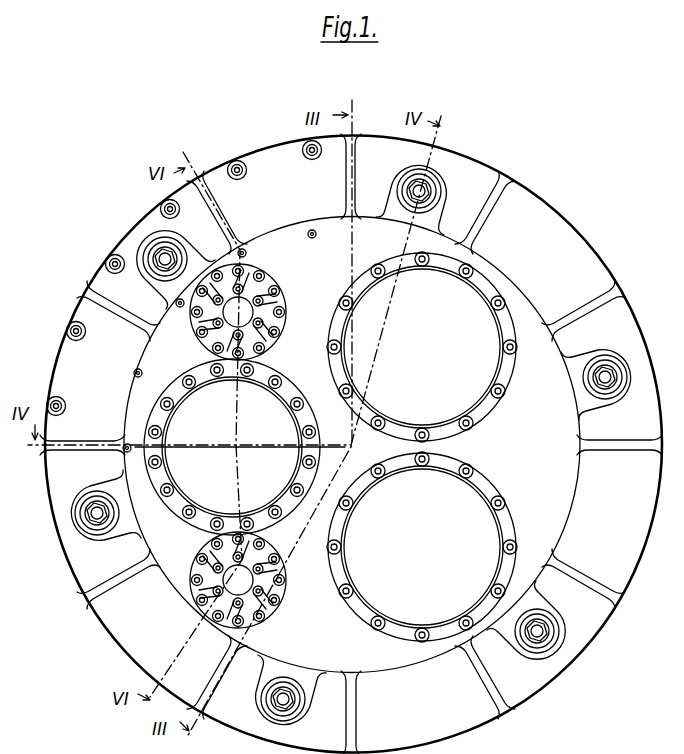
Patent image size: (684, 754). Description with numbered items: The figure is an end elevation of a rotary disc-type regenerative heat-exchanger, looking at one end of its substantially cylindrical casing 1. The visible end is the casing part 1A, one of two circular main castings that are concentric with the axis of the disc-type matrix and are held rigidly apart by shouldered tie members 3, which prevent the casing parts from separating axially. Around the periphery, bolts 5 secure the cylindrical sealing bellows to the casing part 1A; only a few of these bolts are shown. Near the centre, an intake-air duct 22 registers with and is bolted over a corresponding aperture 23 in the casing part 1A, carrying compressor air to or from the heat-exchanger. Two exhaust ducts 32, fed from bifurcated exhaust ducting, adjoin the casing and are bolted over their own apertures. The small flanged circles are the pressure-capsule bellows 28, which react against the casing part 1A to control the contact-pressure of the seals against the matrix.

The casing 1 is at (540, 225).
The casing part 1A is at (615, 563).
The shouldered tie member 3 is at (165, 259).
The bolt 5 is at (312, 140).
The intake-air duct 22 is at (168, 432).
The aperture 23 is at (268, 437).
The pressure-capsule bellows 28 is at (292, 292).
The exhaust duct 32 is at (452, 457).